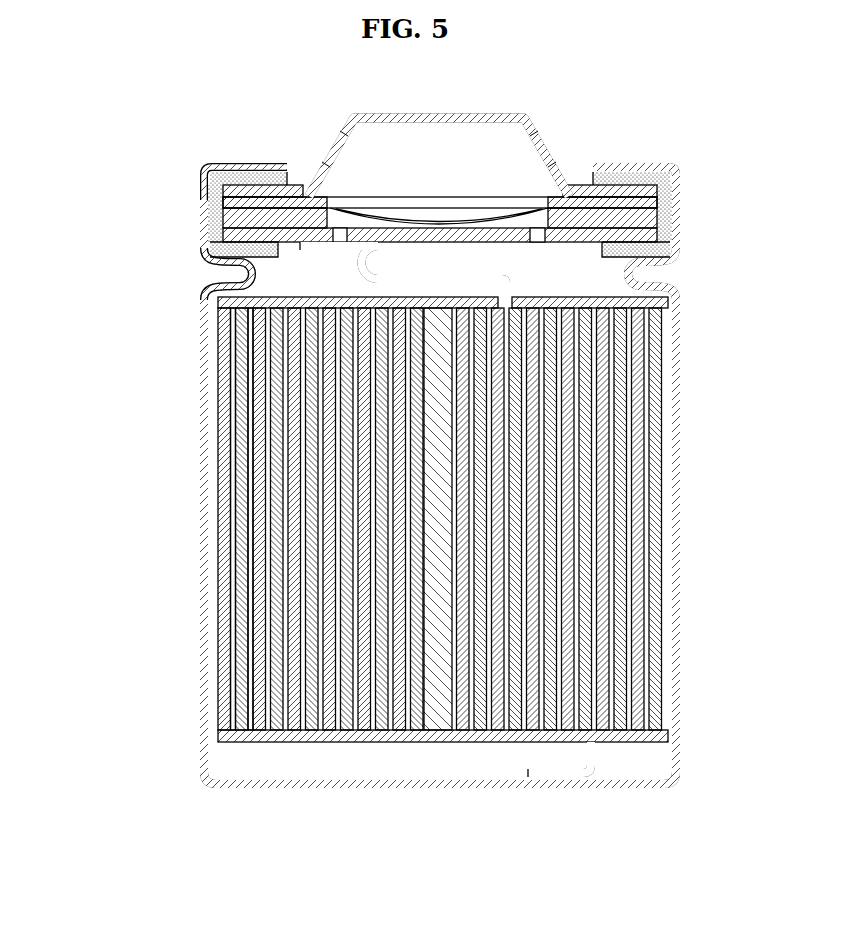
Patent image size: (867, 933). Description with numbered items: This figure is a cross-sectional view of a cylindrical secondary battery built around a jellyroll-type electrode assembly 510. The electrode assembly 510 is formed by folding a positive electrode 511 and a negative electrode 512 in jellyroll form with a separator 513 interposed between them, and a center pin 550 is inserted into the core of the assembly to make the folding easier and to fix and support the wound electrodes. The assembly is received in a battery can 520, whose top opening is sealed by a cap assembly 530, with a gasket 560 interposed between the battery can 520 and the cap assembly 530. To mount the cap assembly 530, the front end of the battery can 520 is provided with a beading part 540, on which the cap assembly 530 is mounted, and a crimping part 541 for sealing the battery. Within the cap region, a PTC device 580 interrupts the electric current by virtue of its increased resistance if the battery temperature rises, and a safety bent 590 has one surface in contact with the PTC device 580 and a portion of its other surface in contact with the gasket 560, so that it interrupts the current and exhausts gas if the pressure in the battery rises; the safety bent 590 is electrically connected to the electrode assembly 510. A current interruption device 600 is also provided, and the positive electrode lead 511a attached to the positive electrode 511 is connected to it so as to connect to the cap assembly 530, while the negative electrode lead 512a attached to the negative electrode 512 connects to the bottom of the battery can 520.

The jellyroll-type electrode assembly 510 is at (124, 332).
The positive electrode 511 is at (222, 356).
The positive electrode lead 511a is at (368, 263).
The negative electrode 512 is at (240, 403).
The negative electrode lead 512a is at (555, 774).
The separator 513 is at (218, 338).
The battery can 520 is at (680, 368).
The cap assembly 530 is at (556, 107).
The beading part 540 is at (210, 266).
The crimping part 541 is at (243, 163).
The center pin 550 is at (437, 528).
The gasket 560 is at (660, 192).
The PTC device 580 is at (223, 200).
The safety bent 590 is at (357, 213).
The current interruption device 600 is at (652, 238).